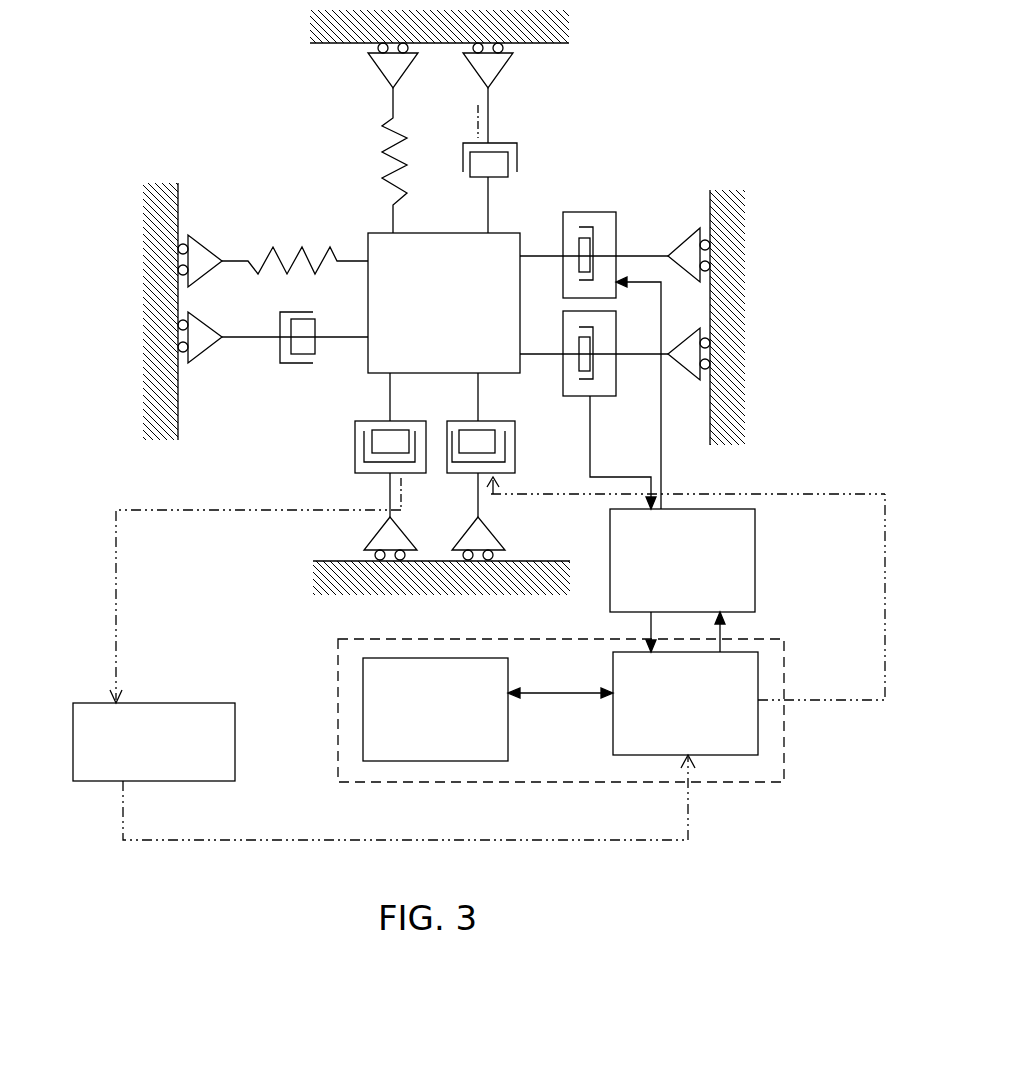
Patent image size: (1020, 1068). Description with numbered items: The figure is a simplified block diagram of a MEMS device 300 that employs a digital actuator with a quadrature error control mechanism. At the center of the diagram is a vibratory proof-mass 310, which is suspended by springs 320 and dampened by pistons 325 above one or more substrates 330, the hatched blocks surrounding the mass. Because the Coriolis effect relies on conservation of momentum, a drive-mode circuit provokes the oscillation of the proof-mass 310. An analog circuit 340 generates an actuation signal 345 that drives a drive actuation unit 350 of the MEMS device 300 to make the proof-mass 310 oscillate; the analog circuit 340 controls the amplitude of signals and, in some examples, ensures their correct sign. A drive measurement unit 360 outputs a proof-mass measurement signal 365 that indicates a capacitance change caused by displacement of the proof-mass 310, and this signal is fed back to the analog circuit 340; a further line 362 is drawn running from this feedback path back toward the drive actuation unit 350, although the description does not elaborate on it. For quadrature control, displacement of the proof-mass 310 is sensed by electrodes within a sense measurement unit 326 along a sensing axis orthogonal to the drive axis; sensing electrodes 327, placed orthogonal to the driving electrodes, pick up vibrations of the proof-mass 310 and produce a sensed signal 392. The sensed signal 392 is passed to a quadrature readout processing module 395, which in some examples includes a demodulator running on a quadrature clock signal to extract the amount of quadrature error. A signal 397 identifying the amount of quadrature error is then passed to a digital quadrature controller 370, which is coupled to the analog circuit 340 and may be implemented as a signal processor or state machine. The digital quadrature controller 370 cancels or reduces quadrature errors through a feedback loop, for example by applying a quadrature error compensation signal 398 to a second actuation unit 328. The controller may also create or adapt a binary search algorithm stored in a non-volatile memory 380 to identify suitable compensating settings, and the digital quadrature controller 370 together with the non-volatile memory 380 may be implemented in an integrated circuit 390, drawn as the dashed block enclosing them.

The MEMS device 300 is at (180, 137).
The vibratory proof-mass 310 is at (447, 232).
The springs 320 is at (380, 134).
The pistons 325 is at (512, 140).
The sense measurement unit (SMU) 326 is at (349, 445).
The sensing electrodes 327 is at (365, 445).
The second actuation unit (SAU) 328 is at (540, 494).
The substrate 330 is at (569, 24).
The analog circuit 340 is at (610, 598).
The actuation signal 345 is at (662, 481).
The drive actuation unit (DAU) 350 is at (578, 212).
The drive measurement unit (DMU) 360 is at (582, 398).
The quadrature compensation signal 362 is at (597, 363).
The proof-mass measurement signal 365 is at (593, 442).
The digital quadrature controller 370 is at (613, 728).
The non-volatile memory 380 is at (362, 752).
The integrated circuit 390 is at (338, 672).
The sensed signal 392 is at (114, 562).
The quadrature readout processing module 395 is at (180, 782).
The signal identifying an amount of quadrature error 397 is at (123, 840).
The quadrature error compensation signal 398 is at (885, 702).